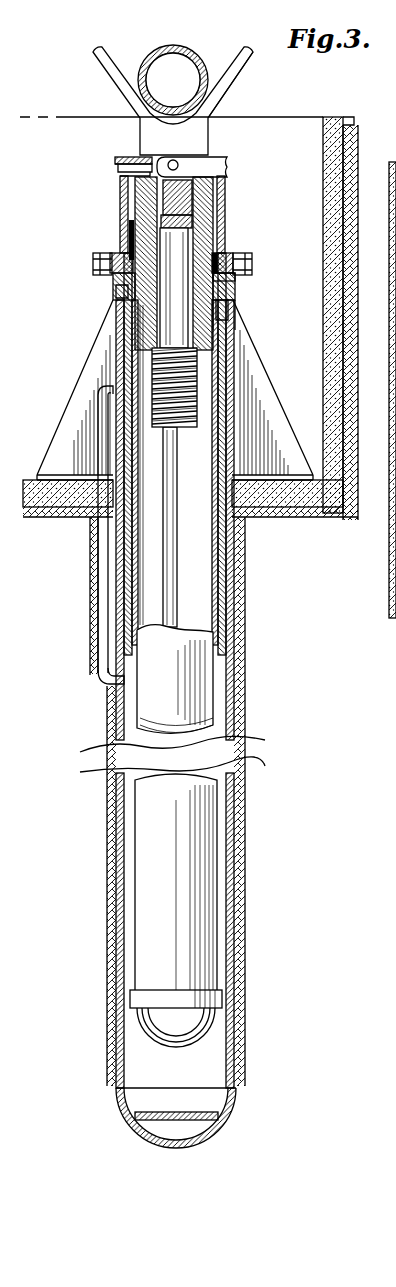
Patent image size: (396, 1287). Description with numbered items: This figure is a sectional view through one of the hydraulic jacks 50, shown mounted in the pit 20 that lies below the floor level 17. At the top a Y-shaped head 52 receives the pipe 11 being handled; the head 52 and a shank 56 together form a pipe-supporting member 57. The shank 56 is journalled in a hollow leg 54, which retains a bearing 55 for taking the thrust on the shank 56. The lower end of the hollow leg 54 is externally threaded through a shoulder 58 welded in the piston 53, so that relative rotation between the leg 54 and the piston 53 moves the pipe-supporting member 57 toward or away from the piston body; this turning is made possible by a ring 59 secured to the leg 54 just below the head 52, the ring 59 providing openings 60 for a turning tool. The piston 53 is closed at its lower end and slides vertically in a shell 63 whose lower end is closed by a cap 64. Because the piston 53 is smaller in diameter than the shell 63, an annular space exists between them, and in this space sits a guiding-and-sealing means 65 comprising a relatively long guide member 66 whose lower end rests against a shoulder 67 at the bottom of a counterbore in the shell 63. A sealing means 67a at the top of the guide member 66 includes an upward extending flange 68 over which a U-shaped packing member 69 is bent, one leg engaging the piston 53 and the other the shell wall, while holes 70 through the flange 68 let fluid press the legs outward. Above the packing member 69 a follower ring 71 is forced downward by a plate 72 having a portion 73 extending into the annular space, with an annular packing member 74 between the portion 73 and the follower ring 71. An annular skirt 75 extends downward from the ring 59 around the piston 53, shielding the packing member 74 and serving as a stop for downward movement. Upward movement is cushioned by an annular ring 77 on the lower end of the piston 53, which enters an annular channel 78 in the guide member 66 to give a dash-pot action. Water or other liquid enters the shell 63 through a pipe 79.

The pipe 11 is at (196, 63).
The floor level 17 is at (356, 117).
The pit 20 is at (297, 136).
The jack 50 is at (241, 623).
The head 52 is at (237, 70).
The piston 53 is at (221, 543).
The hollow leg 54 is at (192, 238).
The bearing 55 is at (198, 218).
The shank 56 is at (226, 186).
The pipe-supporting member 57 is at (121, 103).
The shoulder 58 is at (217, 265).
The ring 59 is at (213, 165).
The openings 60 is at (130, 157).
The shell 63 is at (233, 1024).
The cap 64 is at (212, 1130).
The guiding-and-sealing means 65 is at (226, 392).
The guide member 66 is at (229, 600).
The shoulder 67 is at (228, 640).
The sealing means 67a is at (240, 293).
The flange 68 is at (233, 306).
The packing member 69 is at (117, 296).
The holes 70 is at (234, 318).
The follower ring 71 is at (113, 284).
The plate 72 is at (252, 263).
The portion 73 is at (128, 256).
The annular packing member 74 is at (93, 265).
The annular skirt 75 is at (120, 208).
The annular ring 77 is at (221, 993).
The annular channel 78 is at (124, 641).
The pipe 79 is at (98, 604).